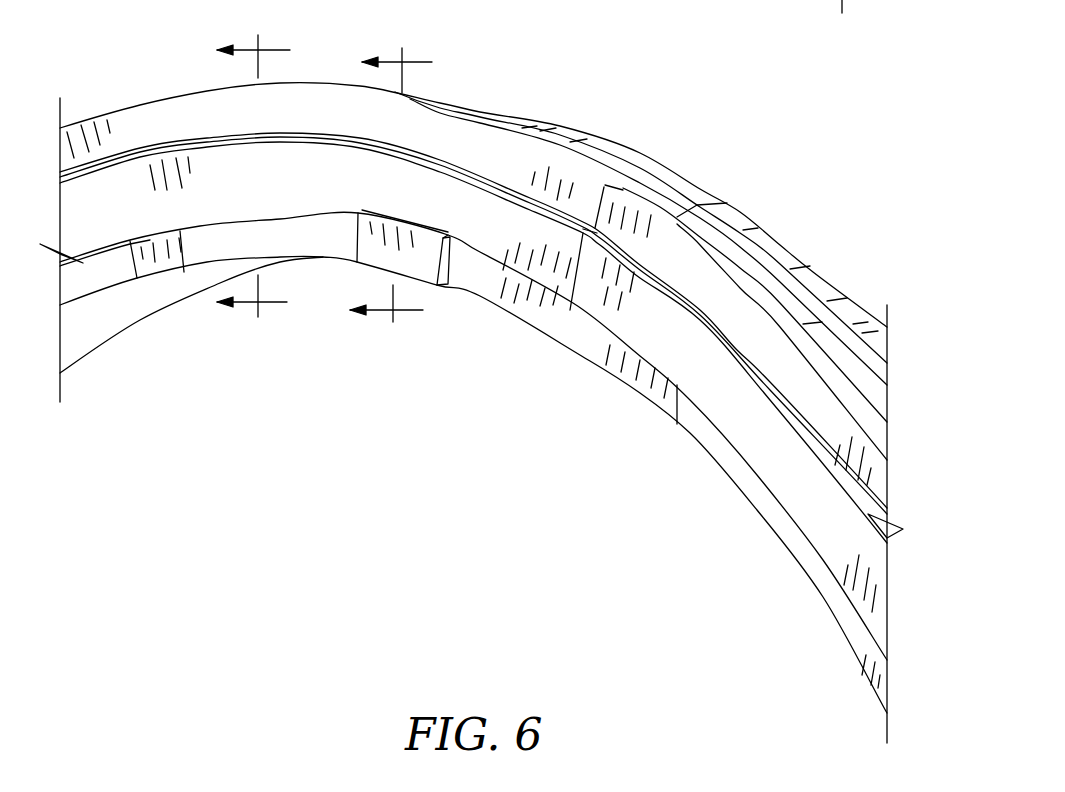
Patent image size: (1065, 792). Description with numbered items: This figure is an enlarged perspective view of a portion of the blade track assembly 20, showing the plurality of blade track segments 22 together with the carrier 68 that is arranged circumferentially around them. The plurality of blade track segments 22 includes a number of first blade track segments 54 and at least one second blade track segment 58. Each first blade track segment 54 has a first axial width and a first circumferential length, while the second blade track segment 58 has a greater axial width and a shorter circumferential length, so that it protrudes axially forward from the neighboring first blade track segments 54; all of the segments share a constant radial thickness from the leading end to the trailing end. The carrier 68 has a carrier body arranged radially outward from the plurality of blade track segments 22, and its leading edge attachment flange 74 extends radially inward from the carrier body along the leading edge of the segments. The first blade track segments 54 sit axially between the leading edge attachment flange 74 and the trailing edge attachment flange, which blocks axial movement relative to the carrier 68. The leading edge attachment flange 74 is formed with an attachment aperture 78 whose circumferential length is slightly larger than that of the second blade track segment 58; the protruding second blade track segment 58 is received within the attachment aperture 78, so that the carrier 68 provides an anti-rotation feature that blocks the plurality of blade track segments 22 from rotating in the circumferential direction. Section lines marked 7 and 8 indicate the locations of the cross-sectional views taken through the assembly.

The blade track assembly 20 is at (627, 143).
The plurality of blade track segments 22 is at (473, 413).
The first blade track segment 54 is at (593, 362).
The second blade track segment 58 is at (441, 287).
The carrier 68 is at (167, 93).
The leading edge attachment flange 74 is at (497, 262).
The attachment aperture 78 is at (408, 212).
The section line 7- 7 is at (264, 176).
The section line 8- 8 is at (401, 189).